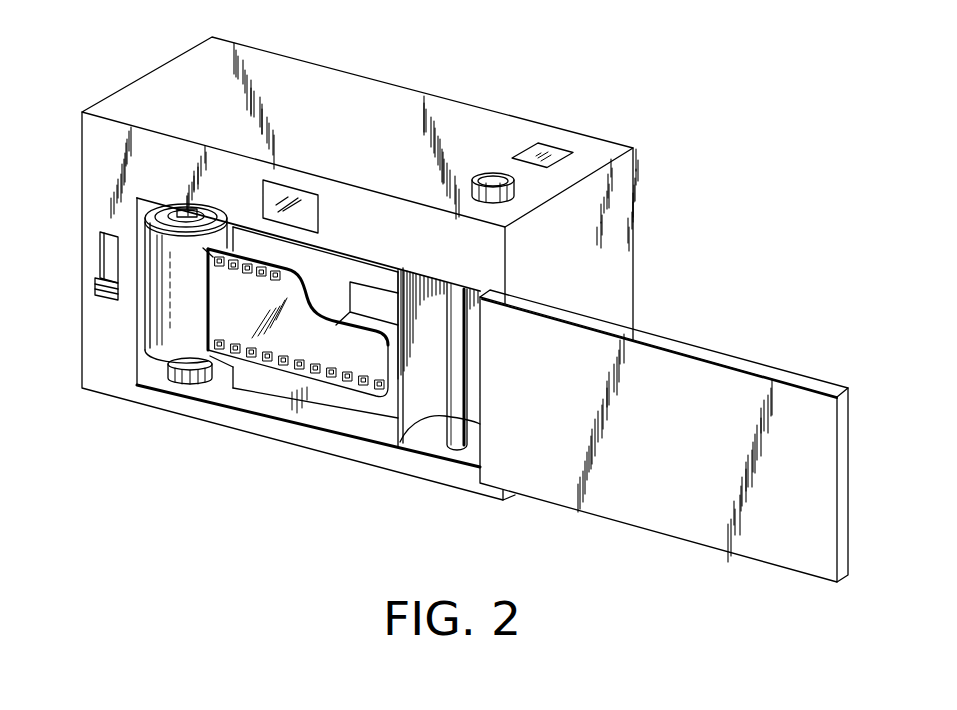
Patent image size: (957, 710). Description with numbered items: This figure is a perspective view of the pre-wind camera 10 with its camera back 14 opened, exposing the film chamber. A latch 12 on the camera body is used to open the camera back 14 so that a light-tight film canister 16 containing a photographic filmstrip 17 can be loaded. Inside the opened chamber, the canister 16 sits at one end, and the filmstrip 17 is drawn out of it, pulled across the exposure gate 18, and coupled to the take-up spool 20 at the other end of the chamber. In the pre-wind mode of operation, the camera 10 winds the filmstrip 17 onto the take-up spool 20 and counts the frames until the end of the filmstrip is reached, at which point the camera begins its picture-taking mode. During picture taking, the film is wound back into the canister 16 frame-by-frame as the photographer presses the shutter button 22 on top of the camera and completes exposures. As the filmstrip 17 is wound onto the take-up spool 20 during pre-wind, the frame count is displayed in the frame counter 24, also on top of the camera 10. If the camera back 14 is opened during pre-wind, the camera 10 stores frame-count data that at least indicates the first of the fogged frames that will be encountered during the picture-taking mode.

The pre-wind camera 10 is at (672, 84).
The latch 12 is at (96, 294).
The camera back 14 is at (733, 355).
The light-tight film canister 16 is at (193, 337).
The photographic filmstrip 17 is at (298, 336).
The exposure gate 18 is at (336, 401).
The take-up spool 20 is at (453, 443).
The shutter button 22 is at (480, 173).
The frame counter 24 is at (551, 150).